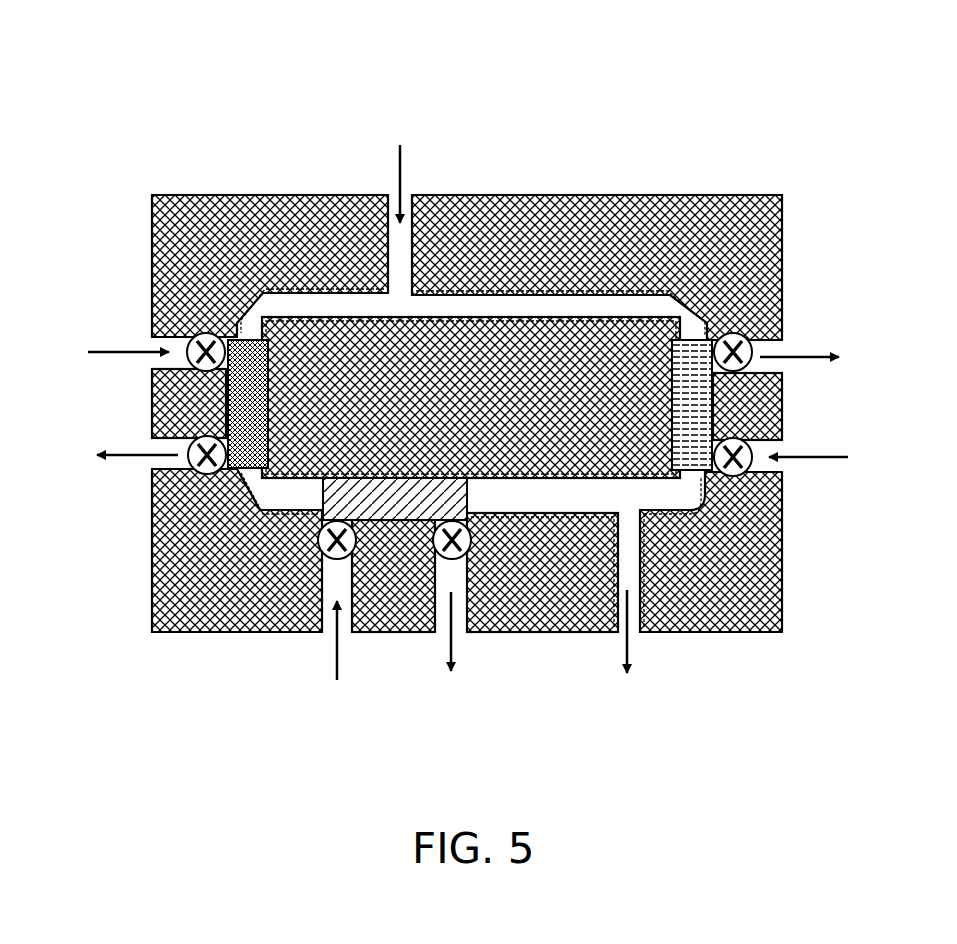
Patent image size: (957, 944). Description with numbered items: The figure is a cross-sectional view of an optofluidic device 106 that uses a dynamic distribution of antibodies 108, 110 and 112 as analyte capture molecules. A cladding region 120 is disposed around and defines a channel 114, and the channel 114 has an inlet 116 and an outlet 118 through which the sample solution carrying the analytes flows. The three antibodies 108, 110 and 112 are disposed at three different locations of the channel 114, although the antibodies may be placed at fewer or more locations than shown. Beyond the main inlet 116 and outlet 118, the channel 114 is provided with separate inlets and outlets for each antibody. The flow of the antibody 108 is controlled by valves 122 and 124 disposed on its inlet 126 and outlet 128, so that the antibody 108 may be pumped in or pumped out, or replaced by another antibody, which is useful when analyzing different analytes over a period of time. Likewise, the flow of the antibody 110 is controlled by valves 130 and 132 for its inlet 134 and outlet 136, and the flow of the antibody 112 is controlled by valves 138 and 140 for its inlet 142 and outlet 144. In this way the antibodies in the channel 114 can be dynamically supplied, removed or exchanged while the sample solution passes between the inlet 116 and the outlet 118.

The optofluidic device 106 is at (808, 108).
The antibody 108 is at (228, 395).
The antibody 110 is at (383, 522).
The antibody 112 is at (713, 398).
The channel 114 is at (510, 305).
The inlet 116 is at (400, 170).
The outlet 118 is at (630, 668).
The cladding region 120 is at (780, 215).
The valve 122 is at (205, 333).
The valve 124 is at (203, 474).
The inlet 126 is at (138, 350).
The outlet 128 is at (138, 460).
The valve 130 is at (320, 550).
The valve 132 is at (470, 542).
The inlet 134 is at (330, 663).
The outlet 136 is at (455, 668).
The valve 138 is at (770, 517).
The valve 140 is at (740, 334).
The inlet 142 is at (807, 460).
The outlet 144 is at (807, 355).